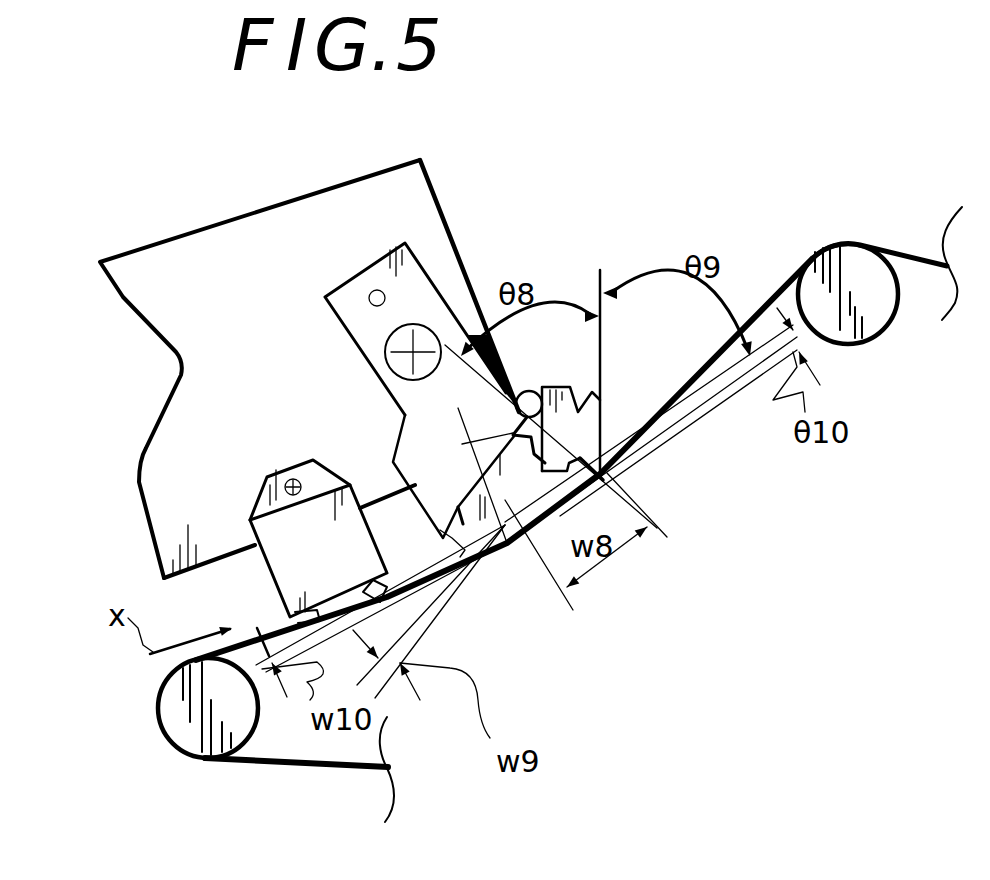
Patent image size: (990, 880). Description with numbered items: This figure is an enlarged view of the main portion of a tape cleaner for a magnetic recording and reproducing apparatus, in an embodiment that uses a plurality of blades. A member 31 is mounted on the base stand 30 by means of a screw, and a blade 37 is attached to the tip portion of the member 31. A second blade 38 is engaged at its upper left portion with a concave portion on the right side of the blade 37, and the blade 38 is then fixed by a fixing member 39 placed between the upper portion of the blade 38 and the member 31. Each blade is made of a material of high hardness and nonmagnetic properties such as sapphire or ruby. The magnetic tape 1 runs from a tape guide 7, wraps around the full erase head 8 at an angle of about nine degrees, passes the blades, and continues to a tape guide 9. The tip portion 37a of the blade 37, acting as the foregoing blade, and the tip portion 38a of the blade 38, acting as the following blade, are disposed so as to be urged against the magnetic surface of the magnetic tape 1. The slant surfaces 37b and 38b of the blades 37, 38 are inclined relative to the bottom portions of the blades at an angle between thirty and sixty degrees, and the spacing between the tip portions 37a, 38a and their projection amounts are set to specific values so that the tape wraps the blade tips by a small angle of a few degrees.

The magnetic tape 1 is at (263, 762).
The tape guide 7 is at (183, 752).
The full erase head 8 is at (264, 590).
The tape guide 9 is at (862, 345).
The base stand 30 is at (123, 293).
The member 31 is at (324, 314).
The blade 37 is at (480, 507).
The tip portion 37a is at (507, 548).
The slant surface 37b is at (464, 563).
The second blade 38 is at (598, 405).
The tip portion 38a is at (600, 468).
The slant surface 38b is at (663, 433).
The fixing member 39 is at (527, 397).